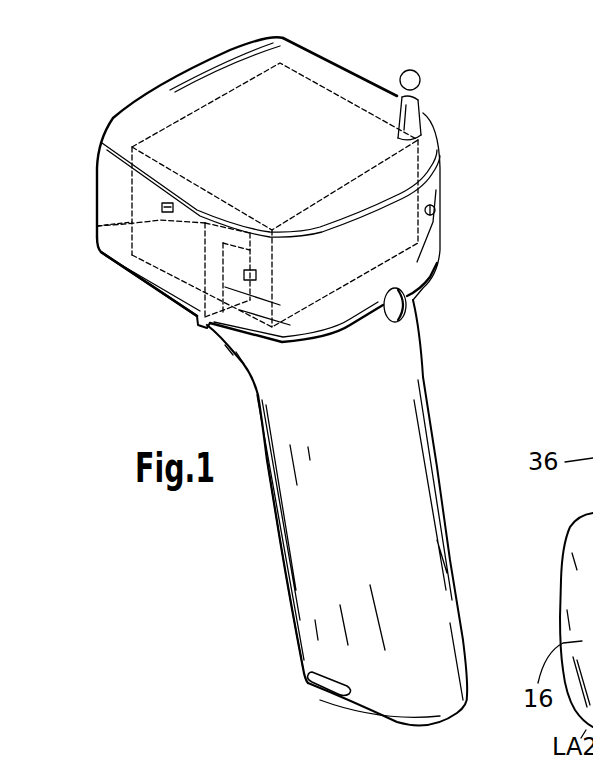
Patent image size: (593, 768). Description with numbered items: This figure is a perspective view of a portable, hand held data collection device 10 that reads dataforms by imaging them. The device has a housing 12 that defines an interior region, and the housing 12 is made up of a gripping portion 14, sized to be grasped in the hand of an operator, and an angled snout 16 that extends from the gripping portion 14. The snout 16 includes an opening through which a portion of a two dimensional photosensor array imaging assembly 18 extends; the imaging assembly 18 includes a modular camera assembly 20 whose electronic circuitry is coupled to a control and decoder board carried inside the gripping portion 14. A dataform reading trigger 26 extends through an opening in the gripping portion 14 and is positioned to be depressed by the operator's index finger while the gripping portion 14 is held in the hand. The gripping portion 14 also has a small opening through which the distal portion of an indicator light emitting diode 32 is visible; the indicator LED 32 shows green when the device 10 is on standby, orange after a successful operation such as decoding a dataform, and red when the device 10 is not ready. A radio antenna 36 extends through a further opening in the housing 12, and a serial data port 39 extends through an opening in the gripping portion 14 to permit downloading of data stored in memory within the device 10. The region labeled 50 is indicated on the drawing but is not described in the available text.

The portable data collection device 10 is at (478, 115).
The housing 12 is at (238, 377).
The gripping portion 14 is at (310, 540).
The angled snout 16 is at (97, 237).
The imaging assembly 18 is at (112, 283).
The modular camera assembly 20 is at (97, 226).
The dataform reading trigger 26 is at (196, 329).
The indicator light emitting diode 32 is at (437, 210).
The radio antenna 36 is at (421, 88).
The serial data port 39 is at (325, 678).
The scanner head 50 is at (347, 49).